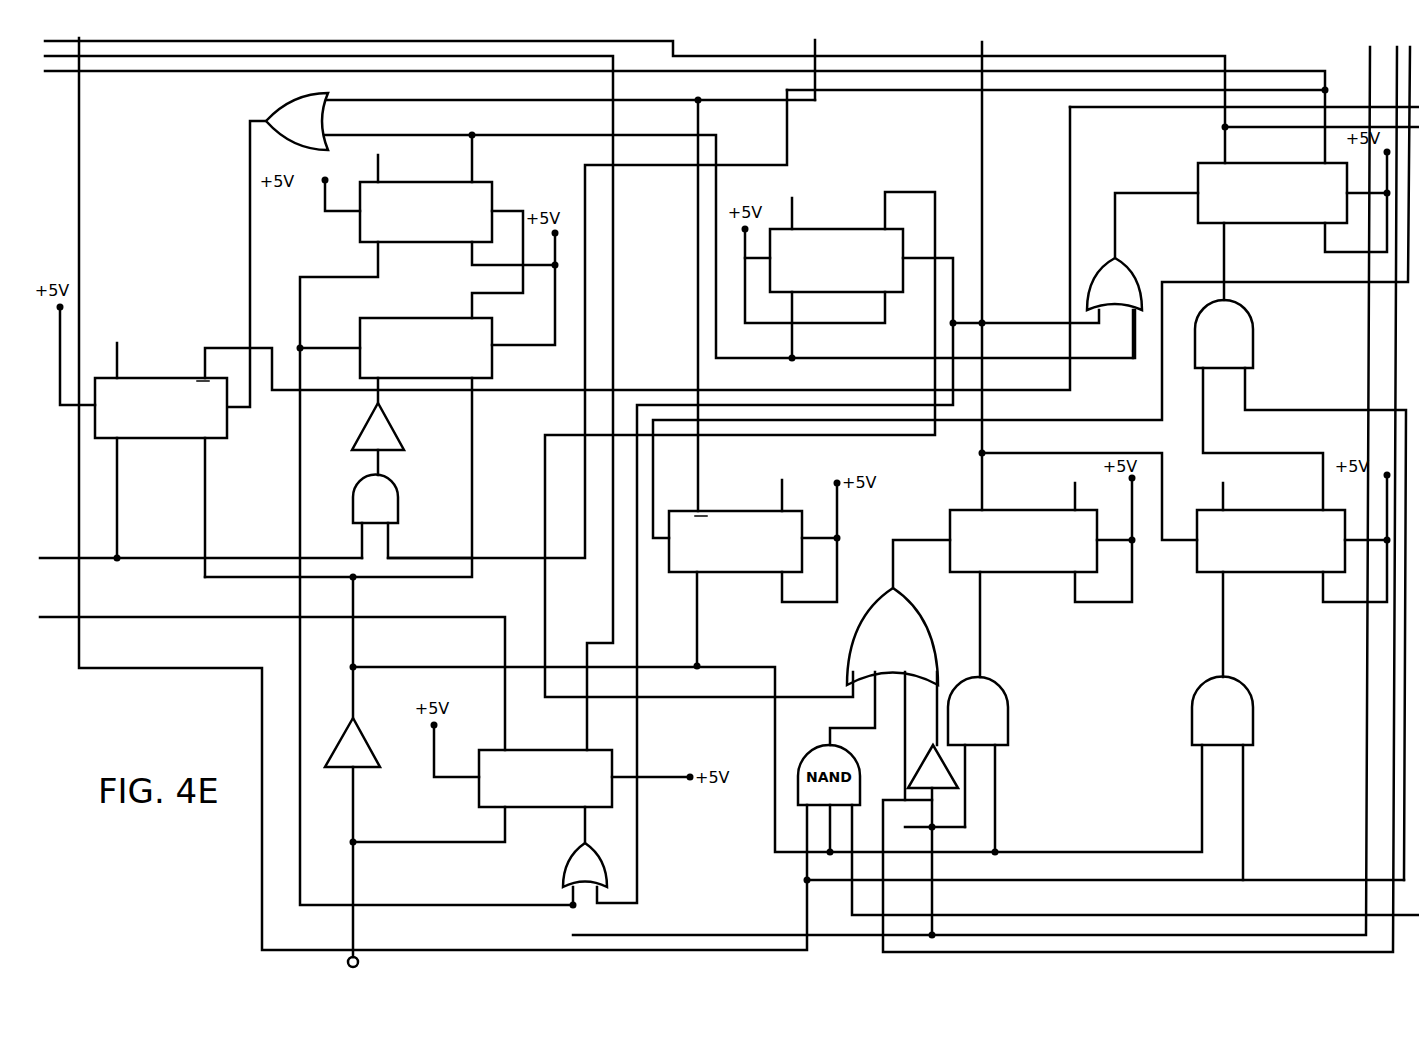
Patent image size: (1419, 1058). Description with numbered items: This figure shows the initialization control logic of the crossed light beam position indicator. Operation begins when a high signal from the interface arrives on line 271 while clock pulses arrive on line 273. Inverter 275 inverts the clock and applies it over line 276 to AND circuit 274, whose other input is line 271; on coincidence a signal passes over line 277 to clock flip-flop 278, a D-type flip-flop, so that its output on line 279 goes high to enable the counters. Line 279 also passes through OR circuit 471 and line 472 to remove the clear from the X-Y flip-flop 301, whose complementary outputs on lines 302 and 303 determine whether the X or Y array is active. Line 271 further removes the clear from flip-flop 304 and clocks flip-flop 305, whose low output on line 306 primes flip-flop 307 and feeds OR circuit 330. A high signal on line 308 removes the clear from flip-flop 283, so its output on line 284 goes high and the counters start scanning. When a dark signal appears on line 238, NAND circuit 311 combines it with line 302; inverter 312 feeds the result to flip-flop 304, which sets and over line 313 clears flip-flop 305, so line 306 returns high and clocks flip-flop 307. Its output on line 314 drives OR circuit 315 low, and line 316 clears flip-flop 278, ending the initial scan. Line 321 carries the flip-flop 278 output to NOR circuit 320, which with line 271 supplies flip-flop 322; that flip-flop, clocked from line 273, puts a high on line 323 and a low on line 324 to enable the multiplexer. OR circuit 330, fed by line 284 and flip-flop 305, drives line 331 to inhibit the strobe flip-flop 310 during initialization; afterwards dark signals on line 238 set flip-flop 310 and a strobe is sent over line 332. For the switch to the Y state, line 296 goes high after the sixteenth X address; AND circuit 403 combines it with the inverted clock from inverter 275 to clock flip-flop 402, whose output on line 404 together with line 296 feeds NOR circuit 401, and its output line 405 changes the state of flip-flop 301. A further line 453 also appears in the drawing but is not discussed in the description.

The line 238 is at (98, 556).
The line 271 is at (1366, 758).
The line 273 is at (355, 925).
The AND circuit 274 is at (1008, 722).
The inverter 275 is at (337, 742).
The line 276 is at (393, 667).
The line 277 is at (981, 637).
The flip-flop 278 is at (1032, 572).
The line 279 is at (983, 226).
The flip-flop 283 is at (737, 572).
The line 284 is at (698, 283).
The line 296 is at (805, 915).
The X-Y flip-flop 301 is at (1270, 223).
The line 302 is at (1292, 68).
The line 303 is at (1205, 53).
The flip-flop 304 is at (492, 364).
The flip-flop 305 is at (425, 243).
The line 306 is at (718, 158).
The flip-flop 307 is at (832, 229).
The line 308 is at (737, 420).
The strobe flip-flop 310 is at (160, 378).
The NAND circuit 311 is at (399, 494).
The inverter 312 is at (396, 433).
The line 313 is at (517, 210).
The line 314 is at (865, 438).
The OR circuit 315 is at (945, 612).
The line 316 is at (937, 540).
The NOR circuit 320 is at (567, 853).
The line 321 is at (637, 840).
The flip-flop 322 is at (542, 750).
The line 323 is at (615, 188).
The line 324 is at (143, 617).
The OR circuit 330 is at (268, 104).
The line 331 is at (252, 246).
The line 332 is at (225, 347).
The NOR circuit 401 is at (1255, 325).
The flip-flop 402 is at (1298, 505).
The AND circuit 403 is at (1198, 683).
The line 404 is at (1230, 453).
The line 405 is at (1224, 258).
The signal line 453 is at (1393, 840).
The OR circuit 471 is at (1090, 283).
The line 472 is at (1117, 217).